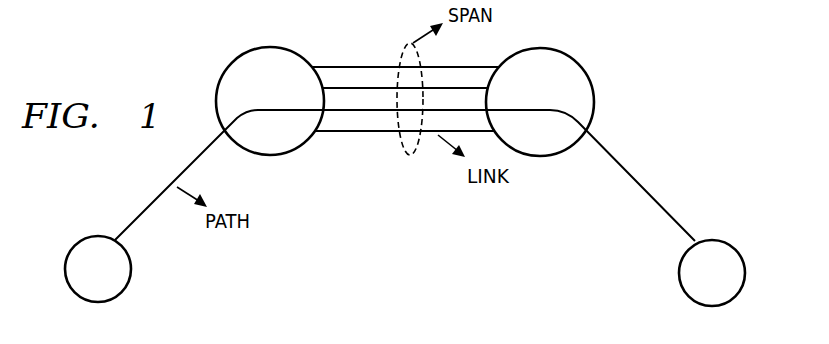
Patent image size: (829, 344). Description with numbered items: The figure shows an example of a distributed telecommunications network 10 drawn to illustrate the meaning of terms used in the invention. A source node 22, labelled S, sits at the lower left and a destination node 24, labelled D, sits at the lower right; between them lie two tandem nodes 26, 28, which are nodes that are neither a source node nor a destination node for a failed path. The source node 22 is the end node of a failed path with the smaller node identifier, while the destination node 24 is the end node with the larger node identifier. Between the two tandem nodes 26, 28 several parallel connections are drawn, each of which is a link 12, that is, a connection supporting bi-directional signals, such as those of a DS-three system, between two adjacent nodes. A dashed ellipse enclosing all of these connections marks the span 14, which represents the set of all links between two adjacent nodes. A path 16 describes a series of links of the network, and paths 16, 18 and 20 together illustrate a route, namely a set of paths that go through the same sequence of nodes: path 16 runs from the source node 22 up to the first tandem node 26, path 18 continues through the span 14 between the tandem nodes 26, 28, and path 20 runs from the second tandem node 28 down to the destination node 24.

The distributed telecommunications network 10 is at (722, 74).
The link 12 is at (383, 133).
The span 14 is at (402, 62).
The path 16 is at (145, 210).
The path 18 is at (345, 113).
The path 20 is at (665, 213).
The source node 22 is at (65, 266).
The destination node 24 is at (746, 268).
The tandem node 26 is at (223, 68).
The tandem node 28 is at (585, 73).